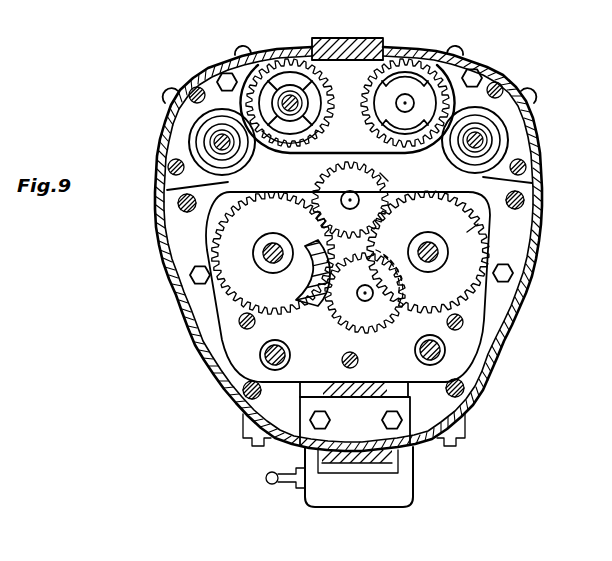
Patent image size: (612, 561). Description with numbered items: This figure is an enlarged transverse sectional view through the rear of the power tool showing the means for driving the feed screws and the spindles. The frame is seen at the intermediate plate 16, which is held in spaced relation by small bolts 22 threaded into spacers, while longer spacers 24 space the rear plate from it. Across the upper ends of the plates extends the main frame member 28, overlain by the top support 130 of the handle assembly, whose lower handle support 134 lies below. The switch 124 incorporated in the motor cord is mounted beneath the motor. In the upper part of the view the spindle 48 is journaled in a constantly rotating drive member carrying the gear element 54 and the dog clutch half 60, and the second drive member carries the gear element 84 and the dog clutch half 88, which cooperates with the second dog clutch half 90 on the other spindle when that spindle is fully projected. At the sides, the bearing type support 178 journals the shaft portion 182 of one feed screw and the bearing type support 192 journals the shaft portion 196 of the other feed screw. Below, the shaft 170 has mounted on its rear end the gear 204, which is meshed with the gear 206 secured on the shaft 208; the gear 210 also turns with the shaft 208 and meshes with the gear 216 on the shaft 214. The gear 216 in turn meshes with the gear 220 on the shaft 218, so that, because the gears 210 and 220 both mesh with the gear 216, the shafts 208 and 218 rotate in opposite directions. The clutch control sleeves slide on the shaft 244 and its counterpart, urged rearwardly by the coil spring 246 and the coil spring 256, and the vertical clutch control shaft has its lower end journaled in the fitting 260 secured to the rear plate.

The intermediate plate 16 is at (518, 243).
The small bolts 22 is at (221, 103).
The spacers 24 is at (526, 204).
The main frame member 28 is at (327, 40).
The top support 130 is at (369, 40).
The dog clutch half 60 is at (288, 70).
The spindle 48 is at (298, 101).
The gear element 54 is at (281, 143).
The dog clutch half 88 is at (406, 70).
The gear element 84 is at (388, 81).
The second dog clutch half 90 is at (380, 110).
The bearing type support 178 is at (187, 131).
The shaft portion 182 is at (224, 152).
The bearing type support 192 is at (510, 134).
The shaft portion 196 is at (477, 152).
The gear 210 is at (226, 233).
The shaft 208 is at (273, 243).
The shaft 218 is at (430, 242).
The shaft 214 is at (350, 199).
The gear 216 is at (388, 181).
The gear 204 is at (369, 330).
The shaft 170 is at (366, 301).
The coil spring 246 is at (400, 300).
The gear 206 is at (305, 305).
The coil spring 256 is at (290, 360).
The shaft 244 is at (440, 350).
The fitting 260 is at (397, 402).
The switch 124 is at (362, 504).
The lower handle support 134 is at (366, 458).
The gear 220 is at (470, 232).